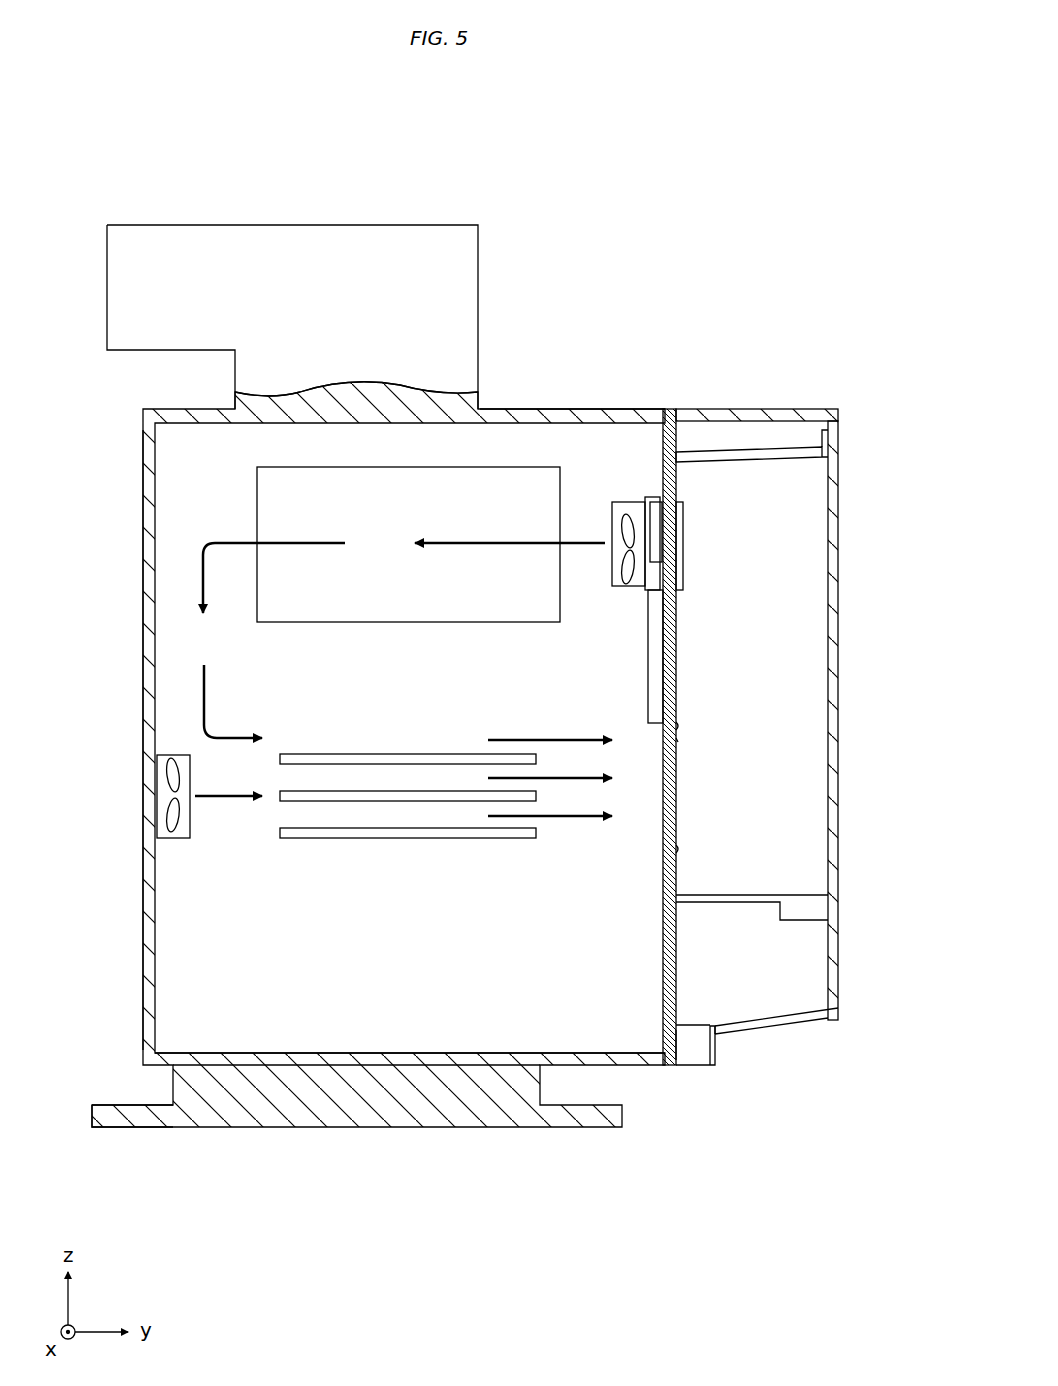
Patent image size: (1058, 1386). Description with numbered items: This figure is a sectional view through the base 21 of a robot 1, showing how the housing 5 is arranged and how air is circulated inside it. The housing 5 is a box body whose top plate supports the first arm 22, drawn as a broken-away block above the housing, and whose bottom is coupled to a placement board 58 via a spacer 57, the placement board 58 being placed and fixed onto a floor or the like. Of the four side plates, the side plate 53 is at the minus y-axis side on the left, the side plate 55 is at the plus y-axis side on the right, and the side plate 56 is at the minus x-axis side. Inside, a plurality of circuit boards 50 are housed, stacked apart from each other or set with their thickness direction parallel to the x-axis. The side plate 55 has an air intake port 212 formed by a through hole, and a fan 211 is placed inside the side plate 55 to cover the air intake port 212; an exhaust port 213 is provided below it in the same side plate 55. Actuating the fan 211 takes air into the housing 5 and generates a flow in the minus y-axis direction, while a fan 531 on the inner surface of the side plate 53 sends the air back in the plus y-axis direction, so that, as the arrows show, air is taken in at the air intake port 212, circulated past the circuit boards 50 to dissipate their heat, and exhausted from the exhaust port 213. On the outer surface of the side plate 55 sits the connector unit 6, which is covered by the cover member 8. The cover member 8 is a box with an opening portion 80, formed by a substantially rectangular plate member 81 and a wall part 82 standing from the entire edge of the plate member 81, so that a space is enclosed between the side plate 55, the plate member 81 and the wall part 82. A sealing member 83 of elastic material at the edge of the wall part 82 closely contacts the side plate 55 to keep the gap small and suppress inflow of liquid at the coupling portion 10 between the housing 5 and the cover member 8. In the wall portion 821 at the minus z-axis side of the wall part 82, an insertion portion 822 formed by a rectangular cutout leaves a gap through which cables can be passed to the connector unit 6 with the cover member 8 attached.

The electronic apparatus 1 is at (660, 152).
The housing 5 is at (143, 457).
The connector unit 6 is at (678, 738).
The cover member 8 is at (792, 690).
The coupling portion 10 is at (667, 409).
The base 21 is at (630, 408).
The first arm 22 is at (398, 225).
The circuit boards 50 is at (495, 498).
The side plate 53 is at (152, 636).
The side plate 55 is at (662, 445).
The side plate 56 is at (200, 968).
The spacer 57 is at (200, 1085).
The placement board 58 is at (130, 1117).
The opening portion 80 is at (672, 1048).
The plate member 81 is at (838, 688).
The wall part 82 is at (743, 408).
The sealing member 83 is at (687, 418).
The fan 211 is at (625, 590).
The air intake port 212 is at (683, 575).
The exhaust port 213 is at (680, 793).
The fan 531 is at (190, 825).
The wall portion 821 is at (790, 1028).
The insertion portion 822 is at (710, 1048).